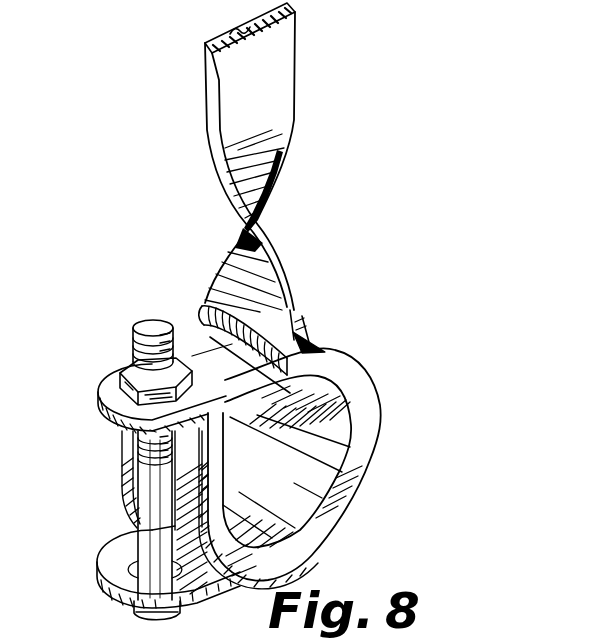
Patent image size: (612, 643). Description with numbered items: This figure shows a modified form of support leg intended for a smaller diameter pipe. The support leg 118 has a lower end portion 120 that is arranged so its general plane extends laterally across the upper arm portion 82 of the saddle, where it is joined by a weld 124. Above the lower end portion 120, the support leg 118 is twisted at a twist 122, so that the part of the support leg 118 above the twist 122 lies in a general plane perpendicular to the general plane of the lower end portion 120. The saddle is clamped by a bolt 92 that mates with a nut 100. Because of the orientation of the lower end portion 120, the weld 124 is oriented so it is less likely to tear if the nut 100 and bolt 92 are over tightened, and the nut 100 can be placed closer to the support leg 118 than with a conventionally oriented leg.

The support leg 118 is at (205, 107).
The twist 122 is at (282, 233).
The lower end portion 120 is at (297, 325).
The weld 124 is at (207, 313).
The nut 100 is at (130, 336).
The upper arm portion 82 is at (376, 397).
The bolt 92 is at (130, 525).